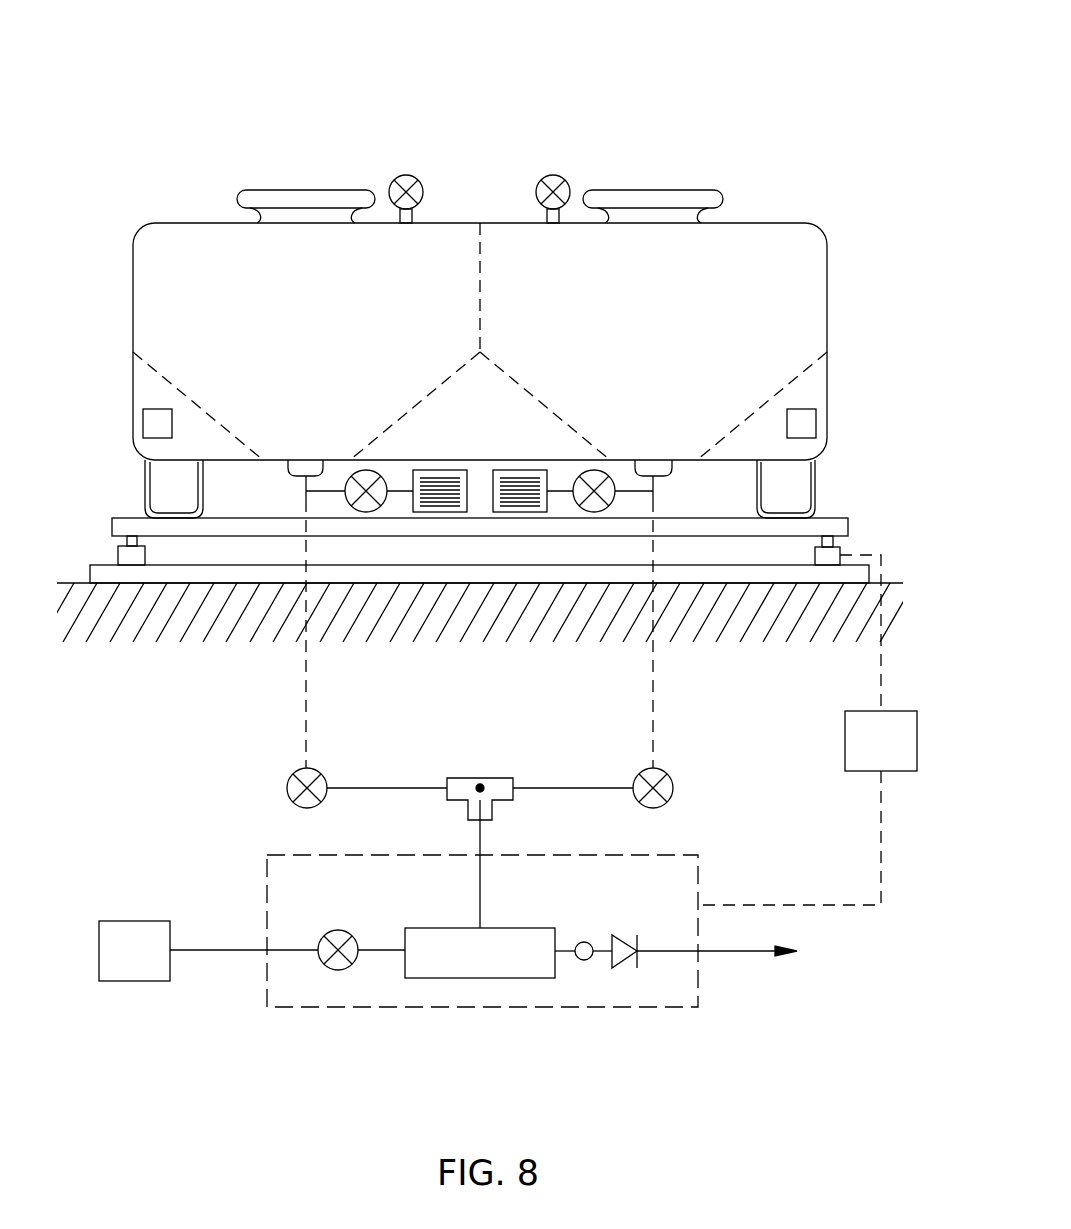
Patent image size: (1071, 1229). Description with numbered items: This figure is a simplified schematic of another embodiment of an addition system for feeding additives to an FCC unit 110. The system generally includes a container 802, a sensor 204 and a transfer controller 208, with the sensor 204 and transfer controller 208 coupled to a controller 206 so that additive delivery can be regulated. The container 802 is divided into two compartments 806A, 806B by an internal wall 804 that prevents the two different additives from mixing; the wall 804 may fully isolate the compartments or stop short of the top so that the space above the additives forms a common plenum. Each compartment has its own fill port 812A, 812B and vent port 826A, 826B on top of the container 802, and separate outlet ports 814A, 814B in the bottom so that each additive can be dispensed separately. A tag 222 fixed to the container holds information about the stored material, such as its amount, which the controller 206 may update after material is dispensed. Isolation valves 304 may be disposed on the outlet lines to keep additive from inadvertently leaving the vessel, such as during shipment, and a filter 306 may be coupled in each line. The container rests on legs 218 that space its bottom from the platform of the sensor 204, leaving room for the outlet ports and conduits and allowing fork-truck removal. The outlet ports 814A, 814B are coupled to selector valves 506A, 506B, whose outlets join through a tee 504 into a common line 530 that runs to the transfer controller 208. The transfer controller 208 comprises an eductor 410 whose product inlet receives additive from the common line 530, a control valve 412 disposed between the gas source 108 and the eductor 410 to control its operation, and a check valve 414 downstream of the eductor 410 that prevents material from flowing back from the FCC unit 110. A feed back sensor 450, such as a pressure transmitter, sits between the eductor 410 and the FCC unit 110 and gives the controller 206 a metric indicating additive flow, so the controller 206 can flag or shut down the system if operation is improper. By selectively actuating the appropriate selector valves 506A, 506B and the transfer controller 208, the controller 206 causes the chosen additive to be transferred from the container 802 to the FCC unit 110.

The container 802 is at (133, 278).
The first compartment 806A is at (331, 280).
The second compartment 806B is at (678, 280).
The internal wall 804 is at (481, 263).
The first fill port 812A is at (280, 190).
The second fill port 812B is at (680, 190).
The first vent port 826A is at (406, 175).
The second vent port 826B is at (553, 175).
The tag 222 is at (158, 409).
The isolation valve 304 is at (366, 470).
The filter 306 is at (437, 470).
The first outlet port 814A is at (303, 468).
The second outlet port 814B is at (657, 468).
The legs 218 is at (815, 490).
The sensor 204 is at (112, 518).
The controller 206 is at (898, 752).
The first selector valve 506A is at (320, 771).
The second selector valve 506B is at (665, 771).
The tee 504 is at (503, 778).
The common line 530 is at (480, 838).
The transfer controller 208 is at (672, 855).
The gas source 108 is at (152, 962).
The control valve 412 is at (338, 930).
The eductor 410 is at (440, 928).
The feed back sensor 450 is at (584, 942).
The check valve 414 is at (623, 935).
The FCC unit 110 is at (742, 954).